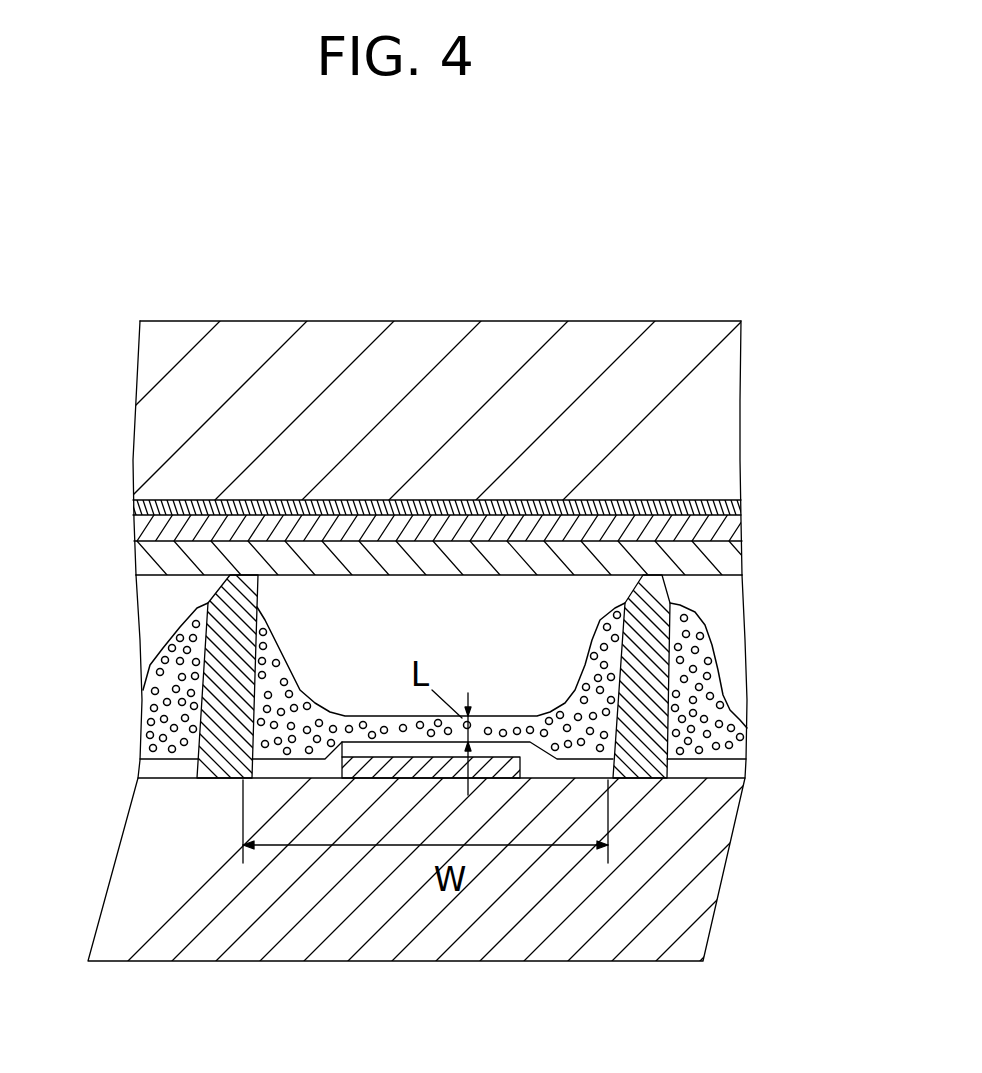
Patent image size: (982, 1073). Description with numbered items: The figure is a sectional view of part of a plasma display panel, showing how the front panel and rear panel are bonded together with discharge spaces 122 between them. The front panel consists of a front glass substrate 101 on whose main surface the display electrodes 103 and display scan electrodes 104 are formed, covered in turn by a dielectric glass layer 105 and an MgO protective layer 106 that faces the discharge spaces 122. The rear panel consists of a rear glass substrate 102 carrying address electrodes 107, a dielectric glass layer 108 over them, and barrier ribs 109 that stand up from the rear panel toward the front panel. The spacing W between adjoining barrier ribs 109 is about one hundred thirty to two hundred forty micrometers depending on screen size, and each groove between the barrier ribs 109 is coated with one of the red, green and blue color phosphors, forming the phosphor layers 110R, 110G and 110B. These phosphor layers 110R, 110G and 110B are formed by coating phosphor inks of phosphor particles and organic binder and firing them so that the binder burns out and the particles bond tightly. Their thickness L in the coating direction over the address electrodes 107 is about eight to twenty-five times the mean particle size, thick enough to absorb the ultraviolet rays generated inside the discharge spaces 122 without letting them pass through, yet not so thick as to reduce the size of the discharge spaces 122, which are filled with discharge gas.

The front glass substrate 101 is at (728, 403).
The rear glass substrate 102 is at (712, 867).
The display electrodes 103 is at (523, 494).
The display scan electrodes 104 is at (740, 508).
The protective layer 105 is at (742, 538).
The MgO protective layer 106 is at (743, 563).
The address electrodes 107 is at (347, 768).
The dielectric glass layer 108 is at (317, 688).
The barrier ribs 109 is at (632, 593).
The red phosphor layer 110R is at (147, 690).
The green phosphor layer 110G is at (573, 755).
The blue phosphor layer 110B is at (727, 723).
The discharge spaces 122 is at (558, 640).